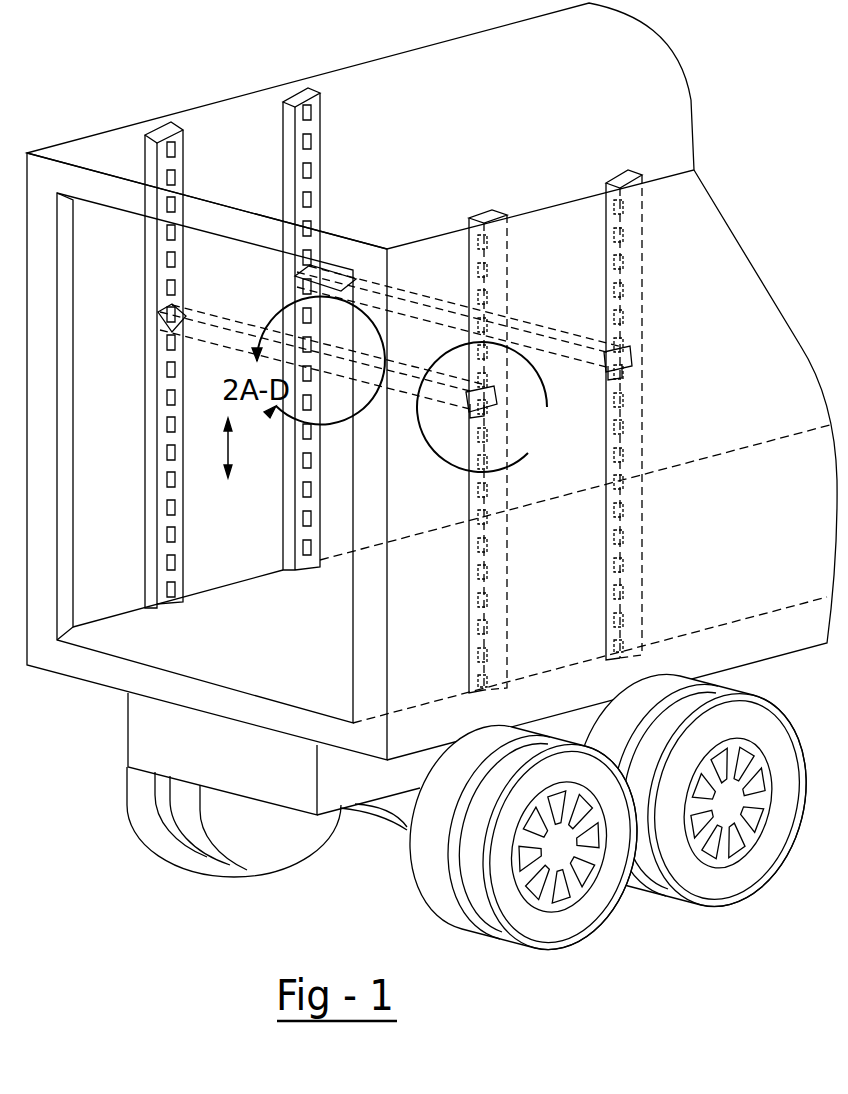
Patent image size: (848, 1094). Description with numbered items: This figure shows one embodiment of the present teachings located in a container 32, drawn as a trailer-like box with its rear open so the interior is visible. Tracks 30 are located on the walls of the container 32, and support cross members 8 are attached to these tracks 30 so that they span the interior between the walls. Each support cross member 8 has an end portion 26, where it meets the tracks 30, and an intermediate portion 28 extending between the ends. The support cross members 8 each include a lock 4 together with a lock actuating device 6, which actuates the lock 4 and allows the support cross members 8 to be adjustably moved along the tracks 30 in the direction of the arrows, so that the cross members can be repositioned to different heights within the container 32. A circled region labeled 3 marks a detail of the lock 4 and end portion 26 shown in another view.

The container 32 is at (232, 60).
The tracks 30 is at (178, 577).
The lock actuating device 6 is at (248, 312).
The support cross member 8 is at (213, 315).
The intermediate portion 28 is at (342, 336).
The end portion 26 is at (633, 346).
The lock 4 is at (622, 376).
The section view indicator 3 is at (484, 407).